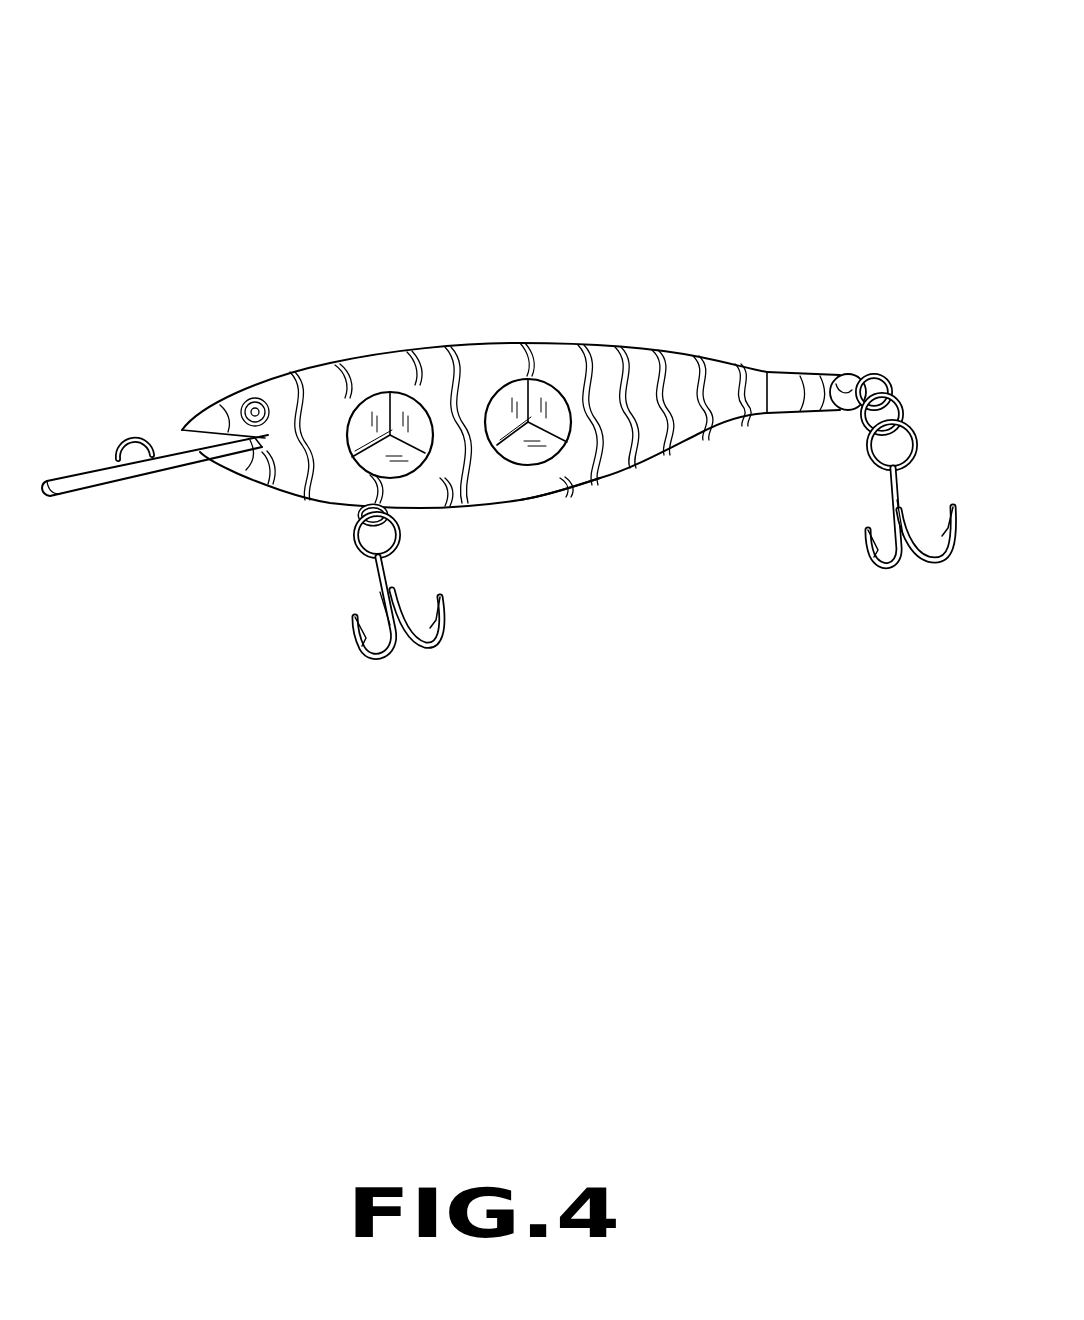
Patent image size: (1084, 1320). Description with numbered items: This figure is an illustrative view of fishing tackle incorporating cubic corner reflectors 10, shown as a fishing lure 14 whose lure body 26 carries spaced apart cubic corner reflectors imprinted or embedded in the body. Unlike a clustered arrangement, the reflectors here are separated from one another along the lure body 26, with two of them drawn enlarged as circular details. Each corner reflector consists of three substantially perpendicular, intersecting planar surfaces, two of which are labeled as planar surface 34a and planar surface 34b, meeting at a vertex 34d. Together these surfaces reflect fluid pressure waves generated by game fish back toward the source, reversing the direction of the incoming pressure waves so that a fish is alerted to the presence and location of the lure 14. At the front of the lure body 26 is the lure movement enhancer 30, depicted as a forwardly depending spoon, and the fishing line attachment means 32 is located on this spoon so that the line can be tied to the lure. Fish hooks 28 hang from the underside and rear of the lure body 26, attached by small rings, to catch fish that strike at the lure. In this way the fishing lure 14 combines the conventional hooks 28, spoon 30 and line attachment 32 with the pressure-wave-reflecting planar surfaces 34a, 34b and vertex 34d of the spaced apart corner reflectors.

The fishing tackle incorporating cubic corner reflector(s) 10 is at (828, 125).
The fishing lure 14 is at (660, 345).
The lure body 26 is at (655, 446).
The fish hooks 28 is at (378, 658).
The lure movement enhancer 30 is at (90, 496).
The fishing line attachment means 32 is at (132, 428).
The planar surface 34a is at (352, 402).
The planar surface 34b is at (390, 392).
The vertex 34d is at (357, 443).